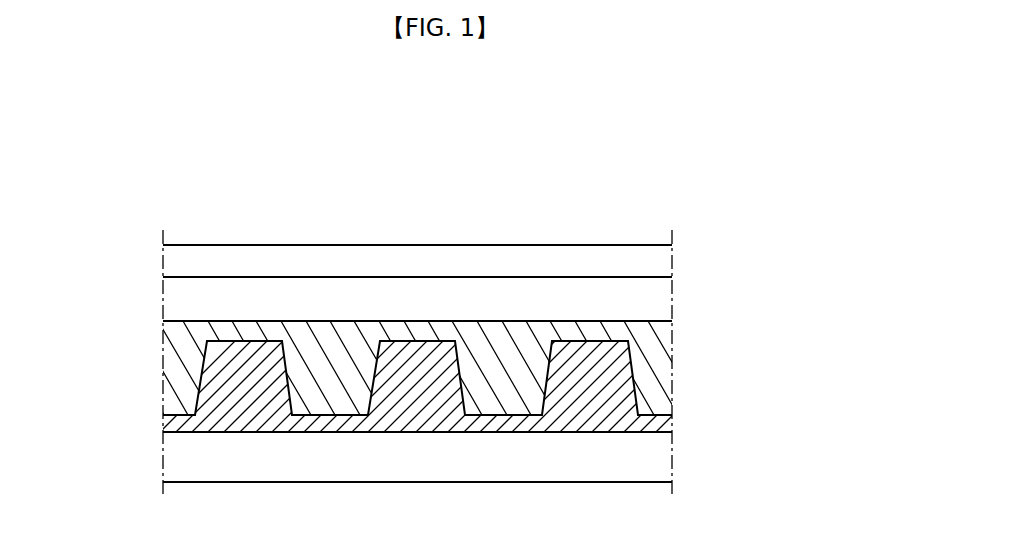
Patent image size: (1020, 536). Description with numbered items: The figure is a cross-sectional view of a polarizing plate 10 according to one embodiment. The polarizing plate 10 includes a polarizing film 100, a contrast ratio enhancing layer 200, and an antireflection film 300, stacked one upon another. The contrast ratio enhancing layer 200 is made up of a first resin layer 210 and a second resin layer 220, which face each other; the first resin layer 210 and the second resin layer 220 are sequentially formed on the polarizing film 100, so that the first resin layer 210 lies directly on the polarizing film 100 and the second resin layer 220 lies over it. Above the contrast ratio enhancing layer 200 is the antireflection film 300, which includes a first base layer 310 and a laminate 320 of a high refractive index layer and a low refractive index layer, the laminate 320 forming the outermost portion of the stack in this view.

The polarizing plate 10 is at (720, 176).
The polarizing film 100 is at (658, 461).
The contrast ratio enhancing layer 200 is at (682, 323).
The first resin layer 210 is at (170, 420).
The second resin layer 220 is at (170, 374).
The antireflection film 300 is at (682, 240).
The first base layer 310 is at (170, 290).
The laminate of a high refractive index layer and a low refractive index layer 320 is at (170, 252).